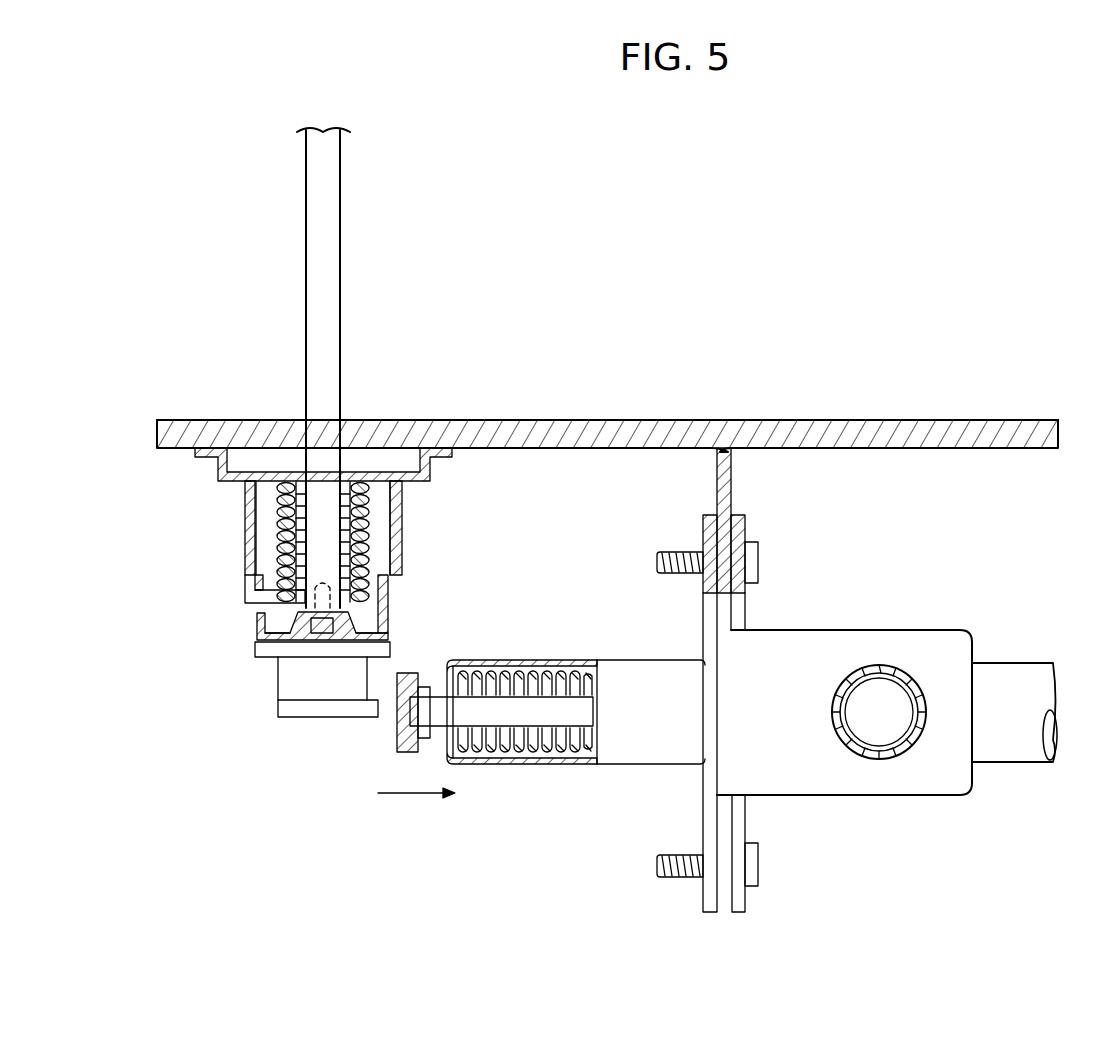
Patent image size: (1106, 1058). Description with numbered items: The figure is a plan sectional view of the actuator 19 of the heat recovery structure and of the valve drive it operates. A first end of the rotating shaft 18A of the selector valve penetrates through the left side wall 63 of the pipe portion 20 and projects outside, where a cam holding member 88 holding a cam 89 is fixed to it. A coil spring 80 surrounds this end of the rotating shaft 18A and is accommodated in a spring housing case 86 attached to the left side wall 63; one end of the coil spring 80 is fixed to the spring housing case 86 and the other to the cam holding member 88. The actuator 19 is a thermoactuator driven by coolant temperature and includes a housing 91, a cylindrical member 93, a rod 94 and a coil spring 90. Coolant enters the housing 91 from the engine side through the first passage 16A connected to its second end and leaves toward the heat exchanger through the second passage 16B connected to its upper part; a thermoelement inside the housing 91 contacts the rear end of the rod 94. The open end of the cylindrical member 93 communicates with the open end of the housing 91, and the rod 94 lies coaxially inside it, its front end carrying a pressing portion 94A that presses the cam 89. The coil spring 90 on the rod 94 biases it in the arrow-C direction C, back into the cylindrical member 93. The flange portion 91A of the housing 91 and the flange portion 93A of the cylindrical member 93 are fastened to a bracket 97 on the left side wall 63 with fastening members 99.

The rotating shaft 18A is at (334, 255).
The pipe portion 20 is at (650, 421).
The left side wall 63 is at (587, 428).
The coil spring 80 is at (276, 518).
The spring housing case 86 is at (402, 518).
The cam holding member 88 is at (258, 623).
The cam 89 is at (285, 708).
The coil spring 90 is at (493, 660).
The cylindrical member 93 is at (623, 665).
The flange portion 93A is at (707, 530).
The rod 94 is at (515, 712).
The pressing portion 94A is at (396, 737).
The bracket 97 is at (733, 470).
The housing 91 is at (922, 630).
The flange portion 91A is at (747, 527).
The fastening members 99 is at (760, 565).
The first passage 16A is at (1016, 752).
The second passage 16B is at (886, 758).
The actuator 19 is at (634, 802).
The arrow-C direction C is at (408, 795).